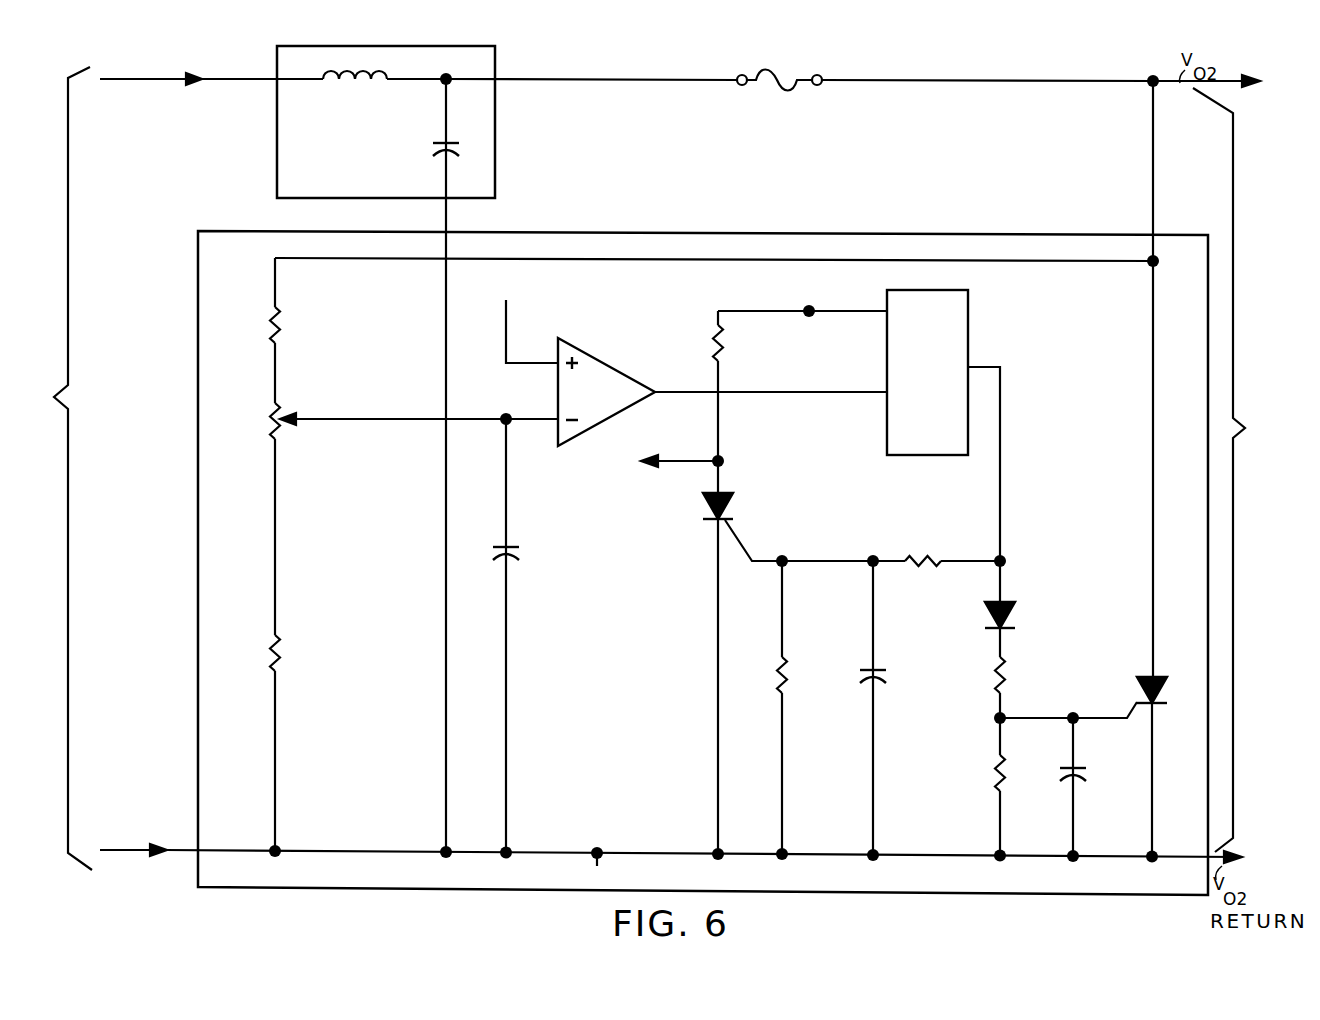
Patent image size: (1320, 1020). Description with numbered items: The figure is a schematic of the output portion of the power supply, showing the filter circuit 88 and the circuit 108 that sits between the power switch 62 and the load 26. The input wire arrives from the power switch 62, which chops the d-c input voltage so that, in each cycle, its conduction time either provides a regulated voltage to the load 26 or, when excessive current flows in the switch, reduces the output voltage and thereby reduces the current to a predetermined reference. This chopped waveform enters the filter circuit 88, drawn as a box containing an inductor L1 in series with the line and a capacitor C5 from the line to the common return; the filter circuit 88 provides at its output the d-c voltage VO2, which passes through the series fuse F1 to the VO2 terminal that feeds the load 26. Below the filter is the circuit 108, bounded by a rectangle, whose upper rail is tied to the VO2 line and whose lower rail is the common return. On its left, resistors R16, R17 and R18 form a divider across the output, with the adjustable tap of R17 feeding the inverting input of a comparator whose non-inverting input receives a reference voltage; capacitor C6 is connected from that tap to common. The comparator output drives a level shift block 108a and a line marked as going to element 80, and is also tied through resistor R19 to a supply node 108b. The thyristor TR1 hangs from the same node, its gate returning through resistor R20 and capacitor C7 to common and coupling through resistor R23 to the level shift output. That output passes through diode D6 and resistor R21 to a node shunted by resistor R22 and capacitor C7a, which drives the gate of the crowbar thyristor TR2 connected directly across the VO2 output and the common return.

The filter circuit 88 is at (386, 138).
The overvoltage protection circuit 108 is at (766, 226).
The level shift circuit 108a is at (925, 456).
The supply voltage node 108b is at (809, 317).
The power switch 62 is at (101, 468).
The load 26 is at (1234, 470).
The control circuit 80 is at (642, 463).
The inductor L1 is at (355, 93).
The filter capacitor C5 is at (425, 155).
The fuse F1 is at (779, 69).
The resistor R16 is at (301, 330).
The potentiometer R17 is at (388, 519).
The resistor R18 is at (299, 743).
The resistor R19 is at (693, 402).
The resistor R20 is at (756, 707).
The resistor R21 is at (975, 706).
The resistor R22 is at (970, 805).
The resistor R23 is at (922, 548).
The capacitor C6 is at (525, 635).
The capacitor C7 is at (853, 708).
The capacitor C7a is at (1098, 787).
The diode D6 is at (1017, 609).
The thyristor TR1 is at (742, 673).
The crowbar thyristor TR2 is at (1121, 767).